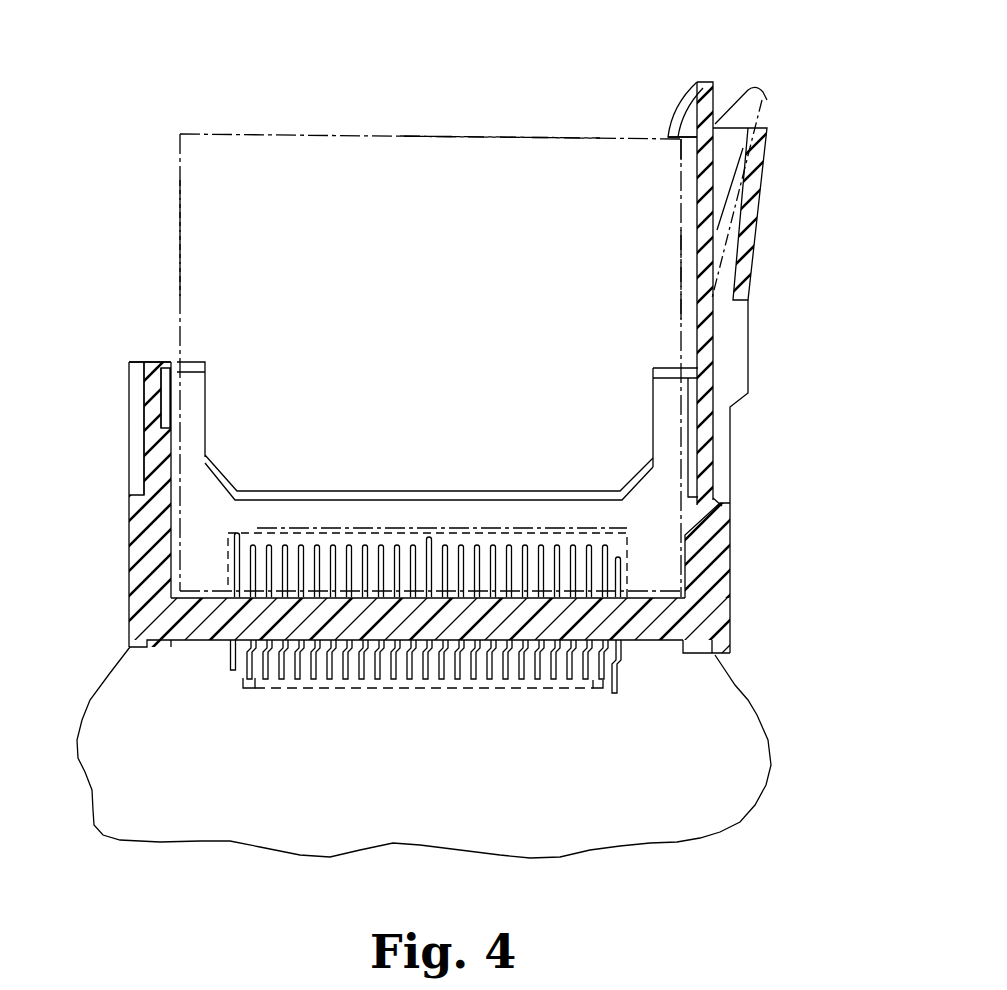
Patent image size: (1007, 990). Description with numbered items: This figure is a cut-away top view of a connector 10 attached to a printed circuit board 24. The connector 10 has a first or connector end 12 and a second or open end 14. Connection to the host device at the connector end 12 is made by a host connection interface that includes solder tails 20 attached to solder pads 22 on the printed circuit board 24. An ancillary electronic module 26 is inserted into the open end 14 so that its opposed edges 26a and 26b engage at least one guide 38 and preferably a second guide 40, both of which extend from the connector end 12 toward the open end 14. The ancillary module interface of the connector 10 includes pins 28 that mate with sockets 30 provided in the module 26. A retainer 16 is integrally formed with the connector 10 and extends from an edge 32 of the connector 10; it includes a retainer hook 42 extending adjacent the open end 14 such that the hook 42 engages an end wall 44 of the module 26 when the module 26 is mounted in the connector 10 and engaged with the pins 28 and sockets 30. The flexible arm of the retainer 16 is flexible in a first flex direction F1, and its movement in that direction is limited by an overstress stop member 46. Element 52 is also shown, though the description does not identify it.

The connector 10 is at (800, 460).
The first end 12 is at (745, 633).
The second end 14 is at (206, 355).
The retainer 16 is at (718, 80).
The solder tails 20 is at (233, 662).
The solder pads 22 is at (253, 690).
The printed circuit board 24 is at (747, 772).
The ancillary electronic module 26 is at (294, 128).
The opposed edge of module 26a is at (174, 205).
The opposed edge of module 26b is at (753, 268).
The pins 28 is at (398, 558).
The sockets 30 is at (235, 525).
The edge 32 is at (733, 538).
The guide 38 is at (167, 402).
The second guide 40 is at (685, 402).
The retainer hook 42 is at (682, 145).
The end wall 44 is at (514, 132).
The overstress stop member 46 is at (760, 182).
The latch tip 52 is at (680, 108).
The first flex direction F1 is at (763, 77).